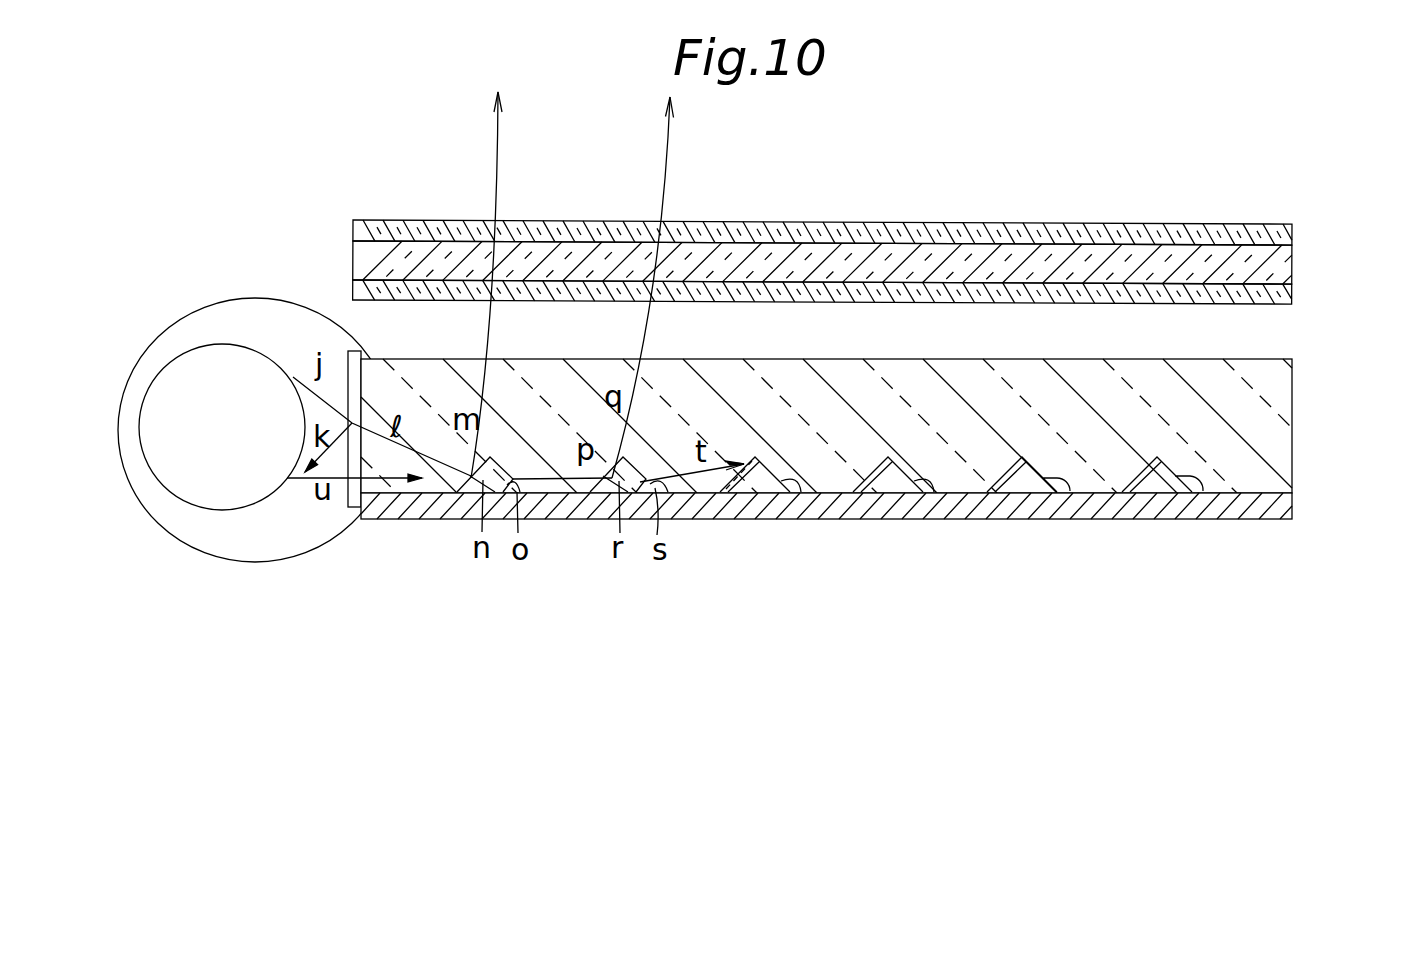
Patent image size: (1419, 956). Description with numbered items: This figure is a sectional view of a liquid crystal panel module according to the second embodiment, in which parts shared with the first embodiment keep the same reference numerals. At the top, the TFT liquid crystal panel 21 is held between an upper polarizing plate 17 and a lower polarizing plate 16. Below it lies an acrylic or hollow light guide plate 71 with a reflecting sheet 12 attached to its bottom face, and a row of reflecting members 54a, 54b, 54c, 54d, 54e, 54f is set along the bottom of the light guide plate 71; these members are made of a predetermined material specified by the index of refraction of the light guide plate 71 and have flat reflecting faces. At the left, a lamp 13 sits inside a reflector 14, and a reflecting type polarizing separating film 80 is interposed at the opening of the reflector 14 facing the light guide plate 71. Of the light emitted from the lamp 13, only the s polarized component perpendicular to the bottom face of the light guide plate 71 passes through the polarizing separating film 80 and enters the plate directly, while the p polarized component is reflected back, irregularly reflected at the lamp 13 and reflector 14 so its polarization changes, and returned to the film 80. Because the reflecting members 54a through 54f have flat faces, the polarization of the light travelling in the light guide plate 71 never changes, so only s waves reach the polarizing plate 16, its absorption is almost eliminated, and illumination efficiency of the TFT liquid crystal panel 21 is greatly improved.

The reflecting sheet 12 is at (1292, 520).
The lamp 13 is at (277, 490).
The reflector 14 is at (253, 540).
The polarizing plate 16 is at (1292, 296).
The polarizing plate 17 is at (1292, 230).
The TFT liquid crystal panel 21 is at (1292, 264).
The light guide plate 71 is at (1292, 443).
The reflecting type polarizing separating film 80 is at (351, 507).
The reflecting member 54a is at (533, 490).
The reflecting member 54b is at (660, 489).
The reflecting member 54c is at (800, 490).
The reflecting member 54d is at (937, 493).
The reflecting member 54e is at (1068, 492).
The reflecting member 54f is at (1200, 490).